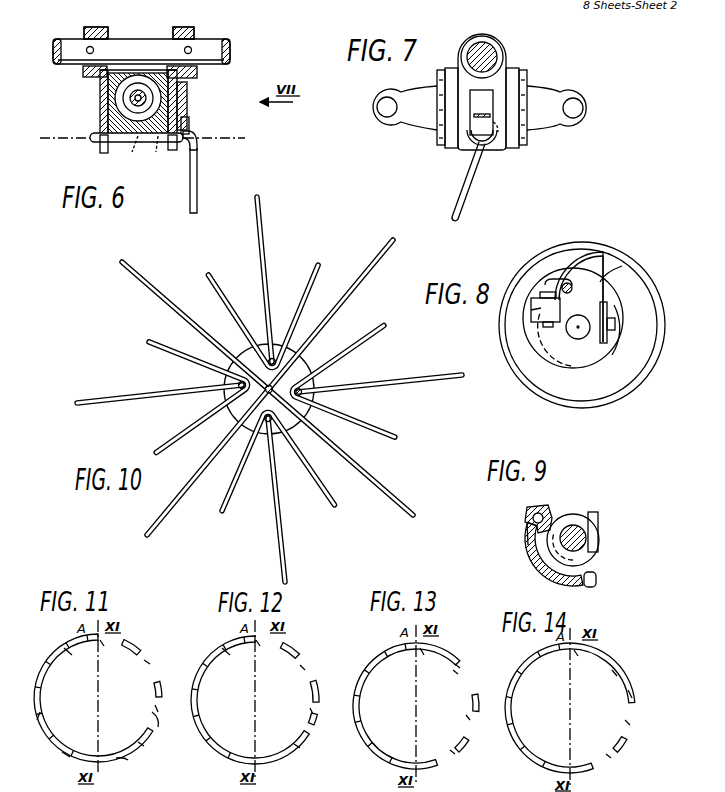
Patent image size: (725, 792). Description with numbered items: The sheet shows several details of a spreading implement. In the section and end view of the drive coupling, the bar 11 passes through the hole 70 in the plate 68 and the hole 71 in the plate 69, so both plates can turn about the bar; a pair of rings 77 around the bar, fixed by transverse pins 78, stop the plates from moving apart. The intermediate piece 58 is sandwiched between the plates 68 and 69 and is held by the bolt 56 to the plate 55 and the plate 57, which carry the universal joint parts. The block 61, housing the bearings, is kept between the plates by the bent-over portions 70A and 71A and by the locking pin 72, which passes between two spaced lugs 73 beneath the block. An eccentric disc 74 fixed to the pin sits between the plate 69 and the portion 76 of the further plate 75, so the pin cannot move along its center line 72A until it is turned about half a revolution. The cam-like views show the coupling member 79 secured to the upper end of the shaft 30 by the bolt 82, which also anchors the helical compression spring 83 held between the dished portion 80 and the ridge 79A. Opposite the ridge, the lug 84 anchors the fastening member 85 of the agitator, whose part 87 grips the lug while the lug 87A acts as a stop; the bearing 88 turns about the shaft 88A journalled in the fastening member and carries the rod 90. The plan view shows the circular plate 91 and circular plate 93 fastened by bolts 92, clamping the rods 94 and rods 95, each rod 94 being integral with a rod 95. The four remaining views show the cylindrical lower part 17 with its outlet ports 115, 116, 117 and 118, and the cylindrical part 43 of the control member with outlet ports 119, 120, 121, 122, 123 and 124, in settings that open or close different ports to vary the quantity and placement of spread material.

In FIG. 6, the bar 11 is at (228, 46).
In FIG. 7, the bar 11 is at (506, 46).
In FIG. 6, the rings 77 is at (96, 30).
In FIG. 7, the rings 77 is at (474, 41).
In FIG. 6, the transverse pins 78 is at (87, 48).
In FIG. 6, the hole 70 is at (108, 31).
In FIG. 6, the hole 71 is at (177, 30).
In FIG. 6, the bent-over portion 70A is at (100, 84).
In FIG. 6, the bent-over portion 71A is at (197, 84).
In FIG. 6, the block 61 is at (107, 98).
In FIG. 6, the plate 68 is at (104, 117).
In FIG. 6, the bolt 56 is at (140, 92).
In FIG. 6, the further plate 75 is at (188, 97).
In FIG. 6, the portion of further plate 76 is at (190, 125).
In FIG. 7, the portion of further plate 76 is at (503, 148).
In FIG. 6, the intermediate piece 58 is at (90, 138).
In FIG. 6, the lugs 73 is at (132, 152).
In FIG. 6, the center line of locking pin 72A is at (157, 152).
In FIG. 6, the plate 69 is at (174, 152).
In FIG. 7, the plate 69 is at (463, 140).
In FIG. 6, the eccentrically mounted disc 74 is at (183, 150).
In FIG. 7, the eccentrically mounted disc 74 is at (497, 152).
In FIG. 6, the locking pin 72 is at (199, 182).
In FIG. 7, the locking pin 72 is at (466, 205).
In FIG. 7, the plate 57 is at (450, 69).
In FIG. 7, the plate 55 is at (527, 69).
In FIG. 8, the fastening member 85 is at (543, 371).
In FIG. 9, the fastening member 85 is at (525, 541).
In FIG. 8, the shaft 30 is at (581, 336).
In FIG. 9, the shaft 30 is at (584, 534).
In FIG. 8, the bearing 88 is at (536, 313).
In FIG. 8, the rod 90 is at (565, 283).
In FIG. 10, the rod 90 is at (232, 425).
In FIG. 8, the helical compression spring 83 is at (605, 256).
In FIG. 8, the ridge 79A is at (622, 266).
In FIG. 9, the ridge 79A is at (598, 517).
In FIG. 8, the bolt 82 is at (615, 331).
In FIG. 8, the dished portion 80 is at (614, 348).
In FIG. 9, the coupling member 79 is at (598, 566).
In FIG. 9, the part 87 is at (534, 578).
In FIG. 9, the lug 87A is at (550, 517).
In FIG. 9, the shaft 88A is at (523, 535).
In FIG. 9, the lug 84 is at (597, 590).
In FIG. 10, the circular plate 91 is at (302, 422).
In FIG. 10, the bolts 92 is at (312, 394).
In FIG. 10, the circular plate 93 is at (269, 389).
In FIG. 10, the rods 94 is at (358, 286).
In FIG. 10, the rods 95 is at (378, 340).
In FIG. 11, the cylindrical lower part of housing 17 is at (48, 730).
In FIG. 12, the cylindrical lower part of housing 17 is at (250, 700).
In FIG. 13, the cylindrical lower part of housing 17 is at (406, 706).
In FIG. 14, the cylindrical lower part of housing 17 is at (570, 708).
In FIG. 11, the outlet port 119 is at (62, 648).
In FIG. 12, the outlet port 119 is at (228, 649).
In FIG. 13, the outlet port 119 is at (460, 668).
In FIG. 14, the outlet port 119 is at (632, 712).
In FIG. 11, the outlet port 115 is at (101, 648).
In FIG. 12, the outlet port 115 is at (258, 648).
In FIG. 13, the outlet port 115 is at (421, 652).
In FIG. 14, the outlet port 115 is at (577, 654).
In FIG. 11, the outlet port 120 is at (122, 641).
In FIG. 12, the outlet port 120 is at (278, 645).
In FIG. 13, the outlet port 120 is at (475, 708).
In FIG. 14, the outlet port 120 is at (615, 763).
In FIG. 11, the outlet port 116 is at (142, 663).
In FIG. 12, the outlet port 116 is at (298, 670).
In FIG. 13, the outlet port 116 is at (456, 670).
In FIG. 14, the outlet port 116 is at (613, 678).
In FIG. 11, the outlet port 121 is at (152, 672).
In FIG. 12, the outlet port 121 is at (314, 677).
In FIG. 13, the outlet port 121 is at (452, 760).
In FIG. 11, the outlet port 117 is at (150, 714).
In FIG. 12, the outlet port 117 is at (308, 716).
In FIG. 13, the outlet port 117 is at (465, 719).
In FIG. 14, the outlet port 117 is at (622, 722).
In FIG. 11, the outlet port 118 is at (136, 745).
In FIG. 12, the outlet port 118 is at (292, 750).
In FIG. 13, the outlet port 118 is at (449, 753).
In FIG. 14, the outlet port 118 is at (607, 755).
In FIG. 11, the outlet port 122 is at (150, 716).
In FIG. 12, the outlet port 122 is at (318, 730).
In FIG. 11, the outlet port 123 is at (117, 760).
In FIG. 11, the outlet port 124 is at (40, 717).
In FIG. 11, the cylindrical part of control member 43 is at (66, 758).